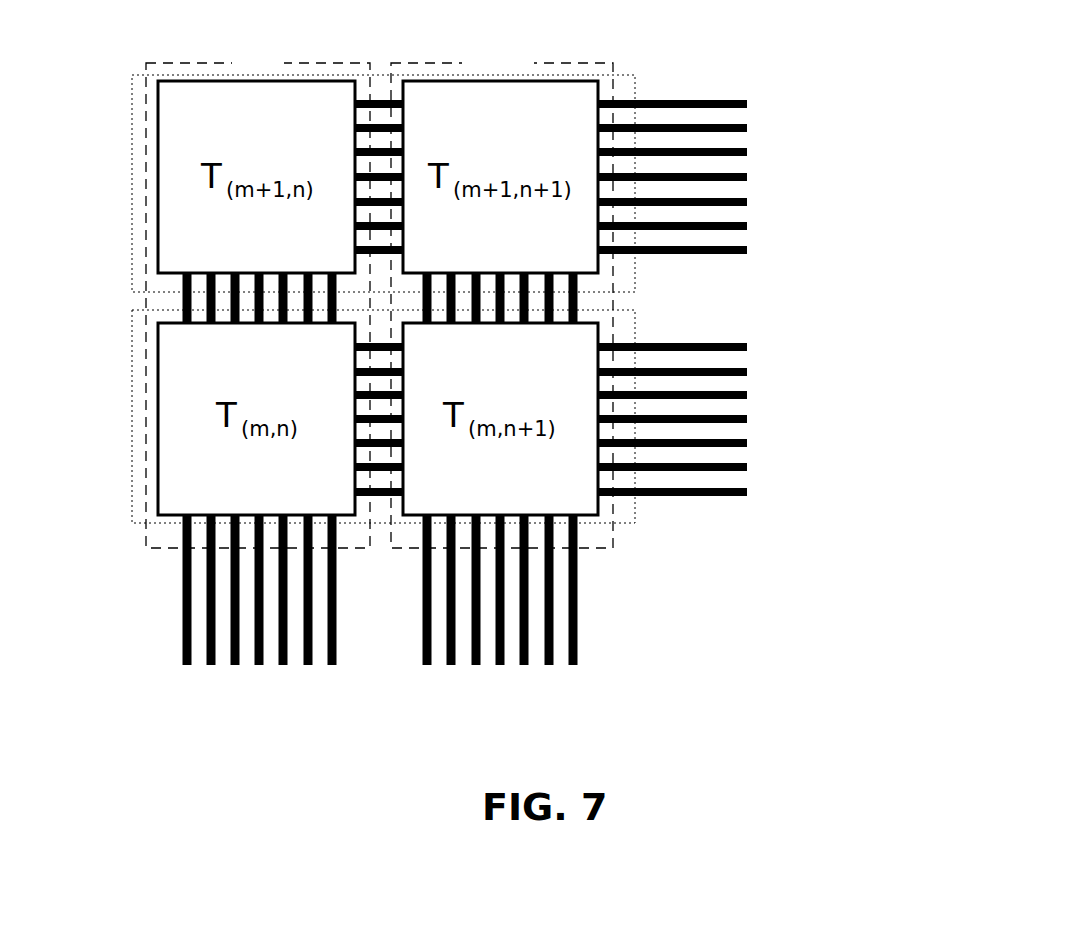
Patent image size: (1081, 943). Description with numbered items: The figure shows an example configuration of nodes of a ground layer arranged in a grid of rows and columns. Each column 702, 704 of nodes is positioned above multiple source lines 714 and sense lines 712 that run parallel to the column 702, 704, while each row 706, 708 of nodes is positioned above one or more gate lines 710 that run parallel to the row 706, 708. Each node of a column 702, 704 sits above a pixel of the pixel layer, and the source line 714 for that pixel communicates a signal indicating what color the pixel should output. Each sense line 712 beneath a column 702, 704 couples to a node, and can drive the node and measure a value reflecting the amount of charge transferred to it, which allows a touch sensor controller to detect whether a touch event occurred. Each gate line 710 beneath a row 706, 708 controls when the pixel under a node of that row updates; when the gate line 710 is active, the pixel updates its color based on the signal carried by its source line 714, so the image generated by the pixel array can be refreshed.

The column 702 is at (157, 62).
The column 704 is at (422, 62).
The row 706 is at (122, 97).
The row 708 is at (130, 343).
The gate line 710 is at (968, 178).
The sense line 712 is at (834, 578).
The source line 714 is at (644, 705).